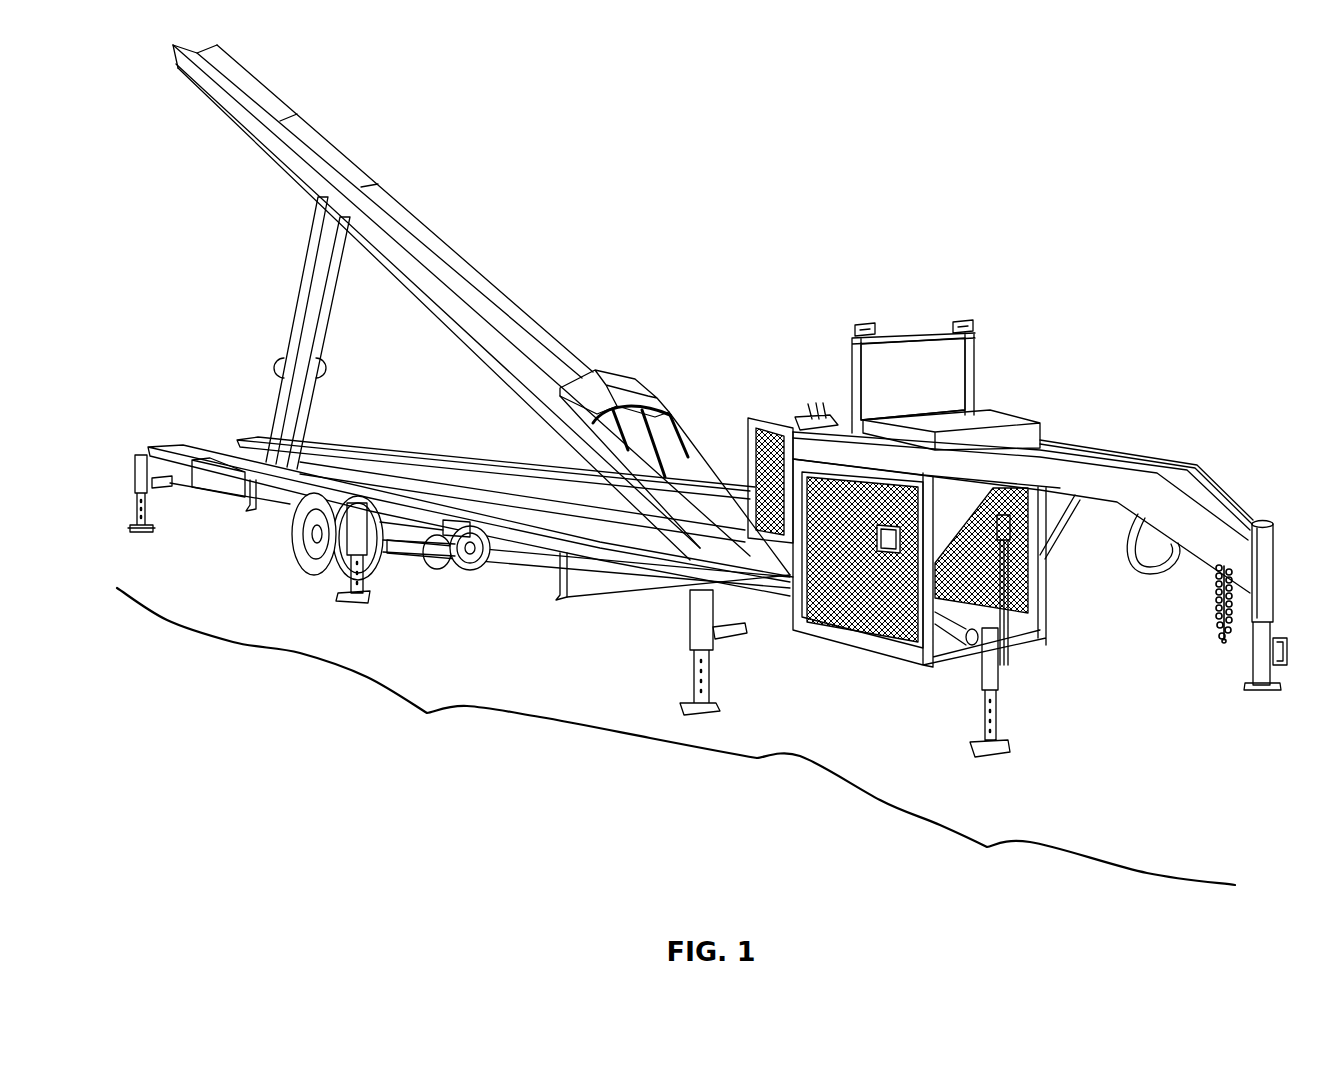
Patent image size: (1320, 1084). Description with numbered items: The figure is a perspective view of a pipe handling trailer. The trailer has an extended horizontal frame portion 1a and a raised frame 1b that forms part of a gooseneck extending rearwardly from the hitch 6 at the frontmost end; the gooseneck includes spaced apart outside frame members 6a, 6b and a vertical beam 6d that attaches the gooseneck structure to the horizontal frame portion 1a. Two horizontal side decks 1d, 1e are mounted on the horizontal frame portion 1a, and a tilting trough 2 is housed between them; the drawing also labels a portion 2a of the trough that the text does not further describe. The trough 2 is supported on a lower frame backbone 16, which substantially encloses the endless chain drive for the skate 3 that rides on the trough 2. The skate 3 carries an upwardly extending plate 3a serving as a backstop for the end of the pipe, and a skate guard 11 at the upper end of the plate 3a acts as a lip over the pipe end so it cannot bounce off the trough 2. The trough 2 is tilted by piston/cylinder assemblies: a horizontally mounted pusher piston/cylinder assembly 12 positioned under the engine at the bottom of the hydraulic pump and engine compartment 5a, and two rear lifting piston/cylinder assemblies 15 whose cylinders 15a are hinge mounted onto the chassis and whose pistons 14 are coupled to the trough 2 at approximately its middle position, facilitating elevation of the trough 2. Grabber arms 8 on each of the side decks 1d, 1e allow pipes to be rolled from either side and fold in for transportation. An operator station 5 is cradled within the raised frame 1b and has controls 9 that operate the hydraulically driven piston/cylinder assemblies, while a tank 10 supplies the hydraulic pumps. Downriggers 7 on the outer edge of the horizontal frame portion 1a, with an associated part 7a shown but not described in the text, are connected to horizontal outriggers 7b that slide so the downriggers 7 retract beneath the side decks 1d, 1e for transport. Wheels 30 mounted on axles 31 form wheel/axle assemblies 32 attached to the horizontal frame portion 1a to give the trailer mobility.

The extended horizontal frame portion 1a is at (665, 585).
The raised frame 1b is at (996, 819).
The horizontal side deck 1d is at (477, 483).
The horizontal side deck 1e is at (423, 500).
The tilting trough 2 is at (422, 227).
The boom base beam 2a is at (590, 530).
The skate 3 is at (680, 428).
The upwardly extending plate 3a is at (660, 390).
The operator station 5 is at (849, 360).
The hydraulic pump and engine compartment 5a is at (895, 647).
The hitch 6 is at (1270, 693).
The outside frame member 6a is at (1117, 447).
The outside frame member 6b is at (1067, 457).
The vertical beam 6d is at (783, 445).
The downrigger 7 is at (145, 533).
The jack bracket 7a is at (730, 635).
The horizontal outrigger 7b is at (160, 485).
The grabber arm 8 is at (258, 510).
The controls 9 is at (826, 398).
The tank 10 is at (1000, 420).
The skate guard 11 is at (617, 378).
The first piston/cylinder assembly 12 is at (958, 645).
The piston 14 is at (308, 243).
The second piston/cylinder assembly 15 is at (281, 297).
The cylinder 15a is at (277, 407).
The backbone 16 is at (437, 313).
The wheel 30 is at (310, 575).
The axle 31 is at (428, 542).
The wheel/axle assembly 32 is at (478, 607).